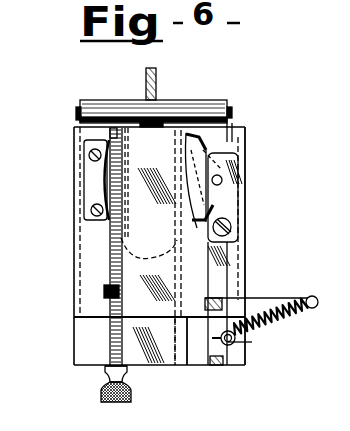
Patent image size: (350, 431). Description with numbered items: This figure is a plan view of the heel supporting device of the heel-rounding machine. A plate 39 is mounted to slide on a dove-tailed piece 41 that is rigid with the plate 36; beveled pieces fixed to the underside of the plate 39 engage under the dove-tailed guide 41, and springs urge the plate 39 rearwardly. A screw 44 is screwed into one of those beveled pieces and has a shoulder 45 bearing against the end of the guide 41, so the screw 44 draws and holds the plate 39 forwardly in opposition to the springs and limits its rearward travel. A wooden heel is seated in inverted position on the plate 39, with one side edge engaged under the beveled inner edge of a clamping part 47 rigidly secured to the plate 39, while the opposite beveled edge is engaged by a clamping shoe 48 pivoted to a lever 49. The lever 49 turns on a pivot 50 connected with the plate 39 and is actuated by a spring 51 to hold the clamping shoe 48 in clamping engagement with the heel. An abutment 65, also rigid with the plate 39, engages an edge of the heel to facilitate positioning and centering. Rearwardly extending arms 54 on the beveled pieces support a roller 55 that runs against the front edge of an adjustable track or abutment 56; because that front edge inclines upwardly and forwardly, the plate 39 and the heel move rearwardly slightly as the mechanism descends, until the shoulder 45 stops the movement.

The plate 36 is at (85, 343).
The plate 39 is at (92, 253).
The dove-tailed piece 41 is at (168, 352).
The screw 44 is at (115, 403).
The shoulder 45 is at (105, 372).
The clamping part 47 is at (90, 168).
The clamping shoe 48 is at (196, 143).
The lever 49 is at (217, 366).
The pivot 50 is at (232, 226).
The spring 51 is at (277, 330).
The arms 54 is at (78, 118).
The roller 55 is at (200, 108).
The track or abutment 56 is at (157, 80).
The abutment 65 is at (163, 121).